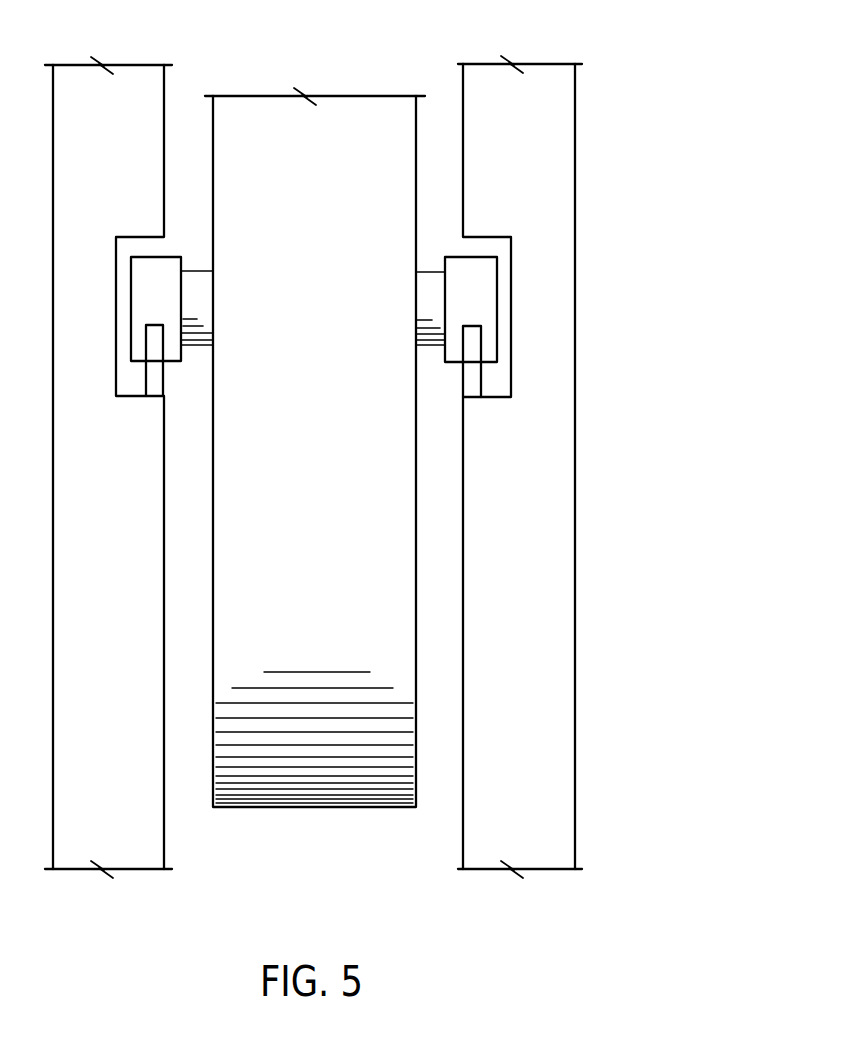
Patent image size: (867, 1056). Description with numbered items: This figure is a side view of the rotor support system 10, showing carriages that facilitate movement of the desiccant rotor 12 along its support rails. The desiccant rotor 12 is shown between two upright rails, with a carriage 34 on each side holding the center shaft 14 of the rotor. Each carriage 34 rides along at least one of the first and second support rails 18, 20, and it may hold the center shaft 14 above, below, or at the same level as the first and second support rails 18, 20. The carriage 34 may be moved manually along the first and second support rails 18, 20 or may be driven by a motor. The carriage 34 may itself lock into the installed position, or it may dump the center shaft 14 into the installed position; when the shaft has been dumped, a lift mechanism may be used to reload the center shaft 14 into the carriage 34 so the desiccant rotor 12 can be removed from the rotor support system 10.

The rotor support system 10 is at (668, 80).
The desiccant rotor 12 is at (310, 808).
The center shaft 14 is at (430, 272).
The first support rail 18 is at (152, 397).
The second support rail 20 is at (475, 398).
The carriage 34 is at (148, 257).